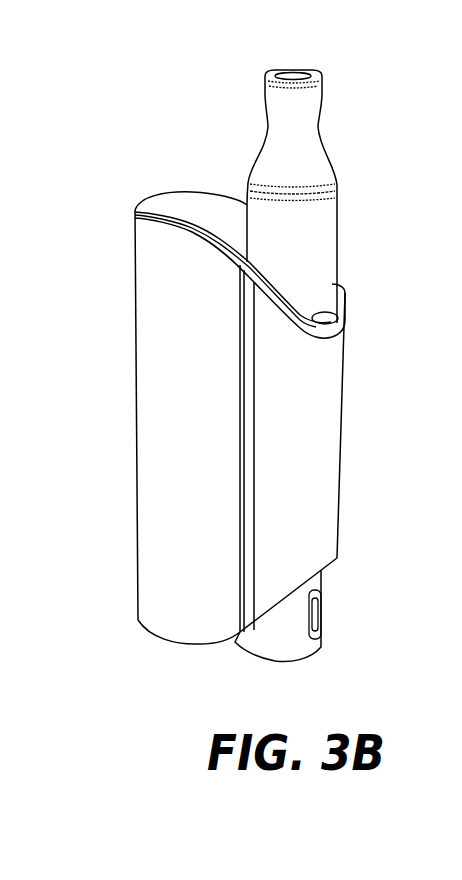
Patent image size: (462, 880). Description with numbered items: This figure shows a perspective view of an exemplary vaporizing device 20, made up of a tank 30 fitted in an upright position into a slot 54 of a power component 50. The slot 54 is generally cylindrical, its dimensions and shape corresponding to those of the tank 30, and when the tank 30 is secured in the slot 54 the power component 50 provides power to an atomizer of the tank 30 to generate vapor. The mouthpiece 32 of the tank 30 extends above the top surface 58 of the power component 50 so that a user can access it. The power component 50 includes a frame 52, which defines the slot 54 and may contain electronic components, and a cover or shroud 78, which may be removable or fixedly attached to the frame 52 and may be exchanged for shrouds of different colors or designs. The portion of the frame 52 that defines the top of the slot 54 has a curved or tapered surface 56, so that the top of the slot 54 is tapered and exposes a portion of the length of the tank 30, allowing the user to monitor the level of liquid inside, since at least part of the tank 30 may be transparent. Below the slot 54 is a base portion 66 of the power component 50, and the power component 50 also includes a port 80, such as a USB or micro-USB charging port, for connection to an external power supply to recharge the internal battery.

The vaporizing device 20 is at (217, 93).
The tank 30 is at (343, 228).
The mouthpiece 32 is at (300, 105).
The power component 50 is at (121, 417).
The frame 52 is at (327, 459).
The slot 54 is at (338, 318).
The curved or tapered surface 56 is at (270, 297).
The top surface 58 is at (182, 207).
The base portion 66 is at (280, 648).
The shroud 78 is at (160, 577).
The port 80 is at (320, 612).